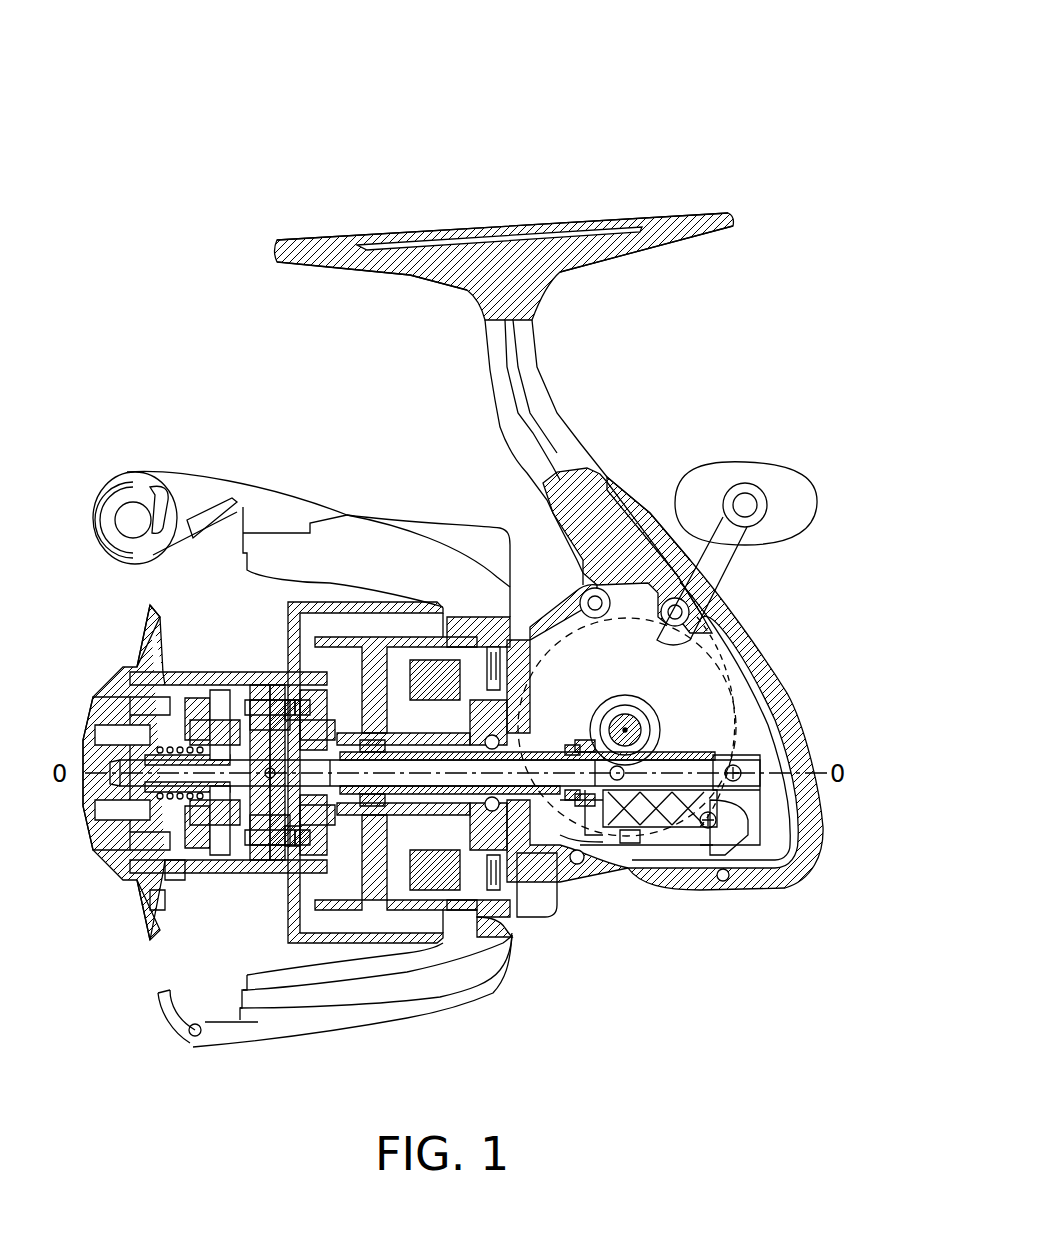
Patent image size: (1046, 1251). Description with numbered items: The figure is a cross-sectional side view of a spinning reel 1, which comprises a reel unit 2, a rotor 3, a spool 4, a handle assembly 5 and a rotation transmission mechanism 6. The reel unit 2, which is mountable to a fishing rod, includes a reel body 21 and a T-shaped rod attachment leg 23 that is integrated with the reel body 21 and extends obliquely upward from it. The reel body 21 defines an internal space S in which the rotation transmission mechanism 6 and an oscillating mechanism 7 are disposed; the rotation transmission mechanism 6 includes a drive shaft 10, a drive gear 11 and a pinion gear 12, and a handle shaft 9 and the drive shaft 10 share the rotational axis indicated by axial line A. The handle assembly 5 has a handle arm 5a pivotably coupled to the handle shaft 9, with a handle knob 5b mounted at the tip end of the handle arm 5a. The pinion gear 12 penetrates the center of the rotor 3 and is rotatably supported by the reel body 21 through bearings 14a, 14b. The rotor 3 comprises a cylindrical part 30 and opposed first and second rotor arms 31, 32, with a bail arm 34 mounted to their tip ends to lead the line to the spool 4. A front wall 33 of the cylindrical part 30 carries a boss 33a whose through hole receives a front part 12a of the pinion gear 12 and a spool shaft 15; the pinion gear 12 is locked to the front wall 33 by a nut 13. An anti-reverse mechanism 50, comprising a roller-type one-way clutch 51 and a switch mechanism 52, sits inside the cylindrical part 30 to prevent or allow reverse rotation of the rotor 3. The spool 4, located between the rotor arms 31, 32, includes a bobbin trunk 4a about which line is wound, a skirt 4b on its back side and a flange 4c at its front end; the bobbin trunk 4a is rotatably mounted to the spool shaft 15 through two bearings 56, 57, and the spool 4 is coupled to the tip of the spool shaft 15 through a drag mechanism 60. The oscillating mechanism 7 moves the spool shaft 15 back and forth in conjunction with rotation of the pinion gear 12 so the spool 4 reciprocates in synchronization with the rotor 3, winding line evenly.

The spinning reel 1 is at (750, 98).
The reel unit 2 is at (626, 442).
The rotor 3 is at (506, 958).
The spool 4 is at (213, 670).
The bobbin trunk 4a is at (232, 672).
The skirt 4b is at (300, 640).
The flange 4c is at (160, 670).
The handle assembly 5 is at (700, 448).
The handle arm 5a is at (725, 542).
The handle knob 5b is at (732, 470).
The rotation transmission mechanism 6 is at (708, 660).
The oscillating mechanism 7 is at (678, 855).
The handle shaft 9 is at (655, 735).
The drive shaft 10 is at (690, 685).
The drive gear 11 is at (562, 620).
The pinion gear 12 is at (523, 745).
The front part of the pinion gear 12a is at (352, 900).
The nut 13 is at (270, 720).
The bearing 14a is at (548, 875).
The bearing 14b is at (601, 845).
The spool shaft 15 is at (712, 855).
The reel body 21 is at (740, 690).
The rod attachment leg 23 is at (537, 403).
The cylindrical part 30 is at (326, 620).
The first rotor arm 31 is at (410, 520).
The second rotor arm 32 is at (420, 1030).
The front wall 33 is at (372, 640).
The boss 33a is at (392, 910).
The bail arm 34 is at (195, 478).
The anti-reverse mechanism 50 is at (470, 560).
The one-way clutch 51 is at (440, 975).
The switch mechanism 52 is at (540, 920).
The bearing 56 is at (240, 830).
The bearing 57 is at (278, 860).
The drag mechanism 60 is at (130, 875).
The axial line A- A is at (618, 725).
The internal space S is at (652, 665).